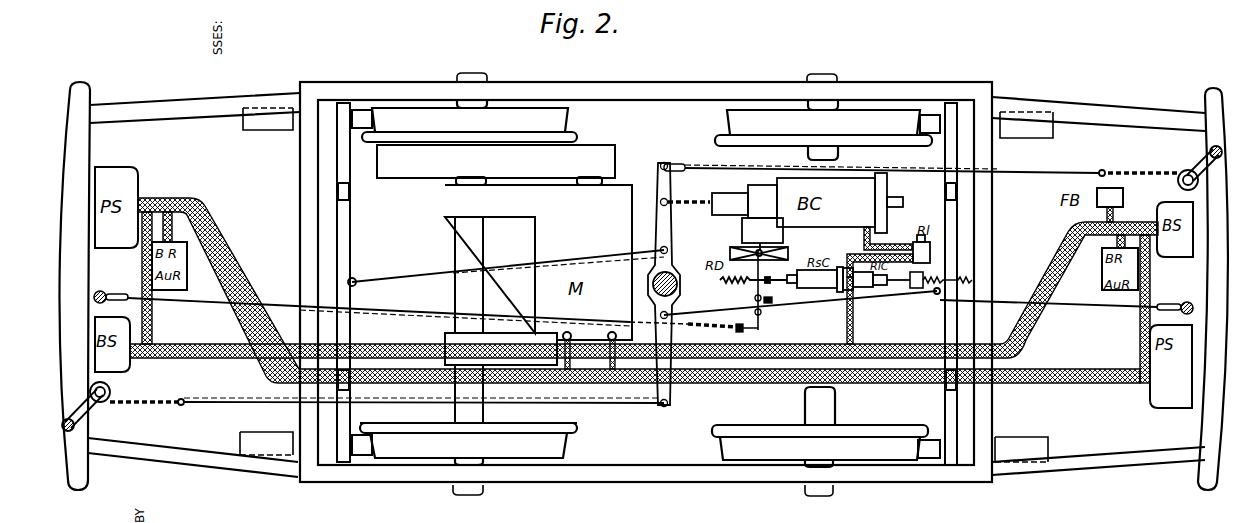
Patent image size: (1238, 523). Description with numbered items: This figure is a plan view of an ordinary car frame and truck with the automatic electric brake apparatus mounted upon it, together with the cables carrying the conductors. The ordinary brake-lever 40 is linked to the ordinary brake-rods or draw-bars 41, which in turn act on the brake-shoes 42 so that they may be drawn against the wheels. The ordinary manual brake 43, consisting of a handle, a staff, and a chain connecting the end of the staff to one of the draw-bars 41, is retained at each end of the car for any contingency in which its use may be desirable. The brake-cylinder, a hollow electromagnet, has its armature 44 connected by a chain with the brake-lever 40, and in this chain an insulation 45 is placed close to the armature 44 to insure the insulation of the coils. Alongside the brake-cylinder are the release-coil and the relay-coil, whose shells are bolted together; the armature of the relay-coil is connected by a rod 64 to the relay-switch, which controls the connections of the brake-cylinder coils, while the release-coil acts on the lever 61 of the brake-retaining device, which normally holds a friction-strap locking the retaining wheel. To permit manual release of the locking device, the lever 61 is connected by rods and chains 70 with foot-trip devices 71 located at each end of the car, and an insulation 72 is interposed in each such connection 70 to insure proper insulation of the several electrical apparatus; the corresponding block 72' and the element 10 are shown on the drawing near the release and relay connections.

The spring clamp on brake rod 10 is at (926, 332).
The brake-lever 40 is at (661, 234).
The brake-rods or draw-bars 41 is at (392, 276).
The brake-shoes 42 is at (363, 108).
The manual brake 43 is at (88, 408).
The armature of the brake-cylinder 44 is at (730, 204).
The insulation 45 is at (689, 190).
The lever 61 is at (755, 292).
The rod 64 is at (900, 277).
The rods and chains 70 is at (443, 309).
The foot-trip devices 71 is at (660, 295).
The insulation 72 is at (780, 293).
The adjustable block 72' is at (732, 335).